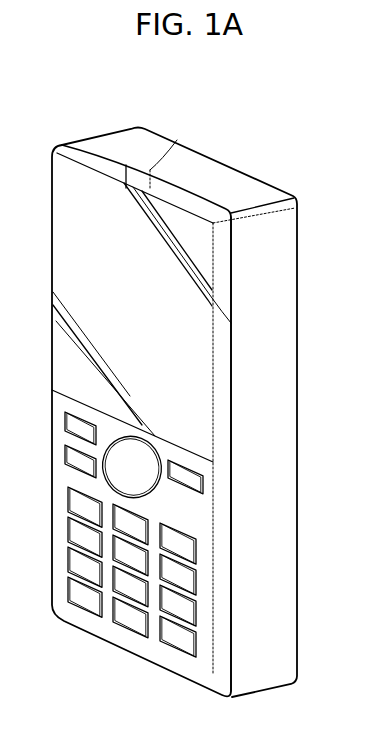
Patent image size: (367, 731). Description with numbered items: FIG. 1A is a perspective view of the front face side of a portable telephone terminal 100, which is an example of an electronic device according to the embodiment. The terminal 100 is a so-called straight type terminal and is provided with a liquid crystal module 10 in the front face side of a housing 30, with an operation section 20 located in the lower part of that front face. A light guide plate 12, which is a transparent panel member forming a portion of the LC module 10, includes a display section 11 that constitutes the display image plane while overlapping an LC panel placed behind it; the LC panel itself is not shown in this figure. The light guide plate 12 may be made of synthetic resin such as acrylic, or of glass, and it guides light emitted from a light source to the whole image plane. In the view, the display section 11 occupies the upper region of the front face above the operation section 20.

The portable telephone terminal 100 is at (260, 127).
The liquid crystal module 10 is at (62, 139).
The display section 11 is at (40, 388).
The light guide plate 12 is at (177, 140).
The operation section 20 is at (40, 592).
The housing 30 is at (298, 282).